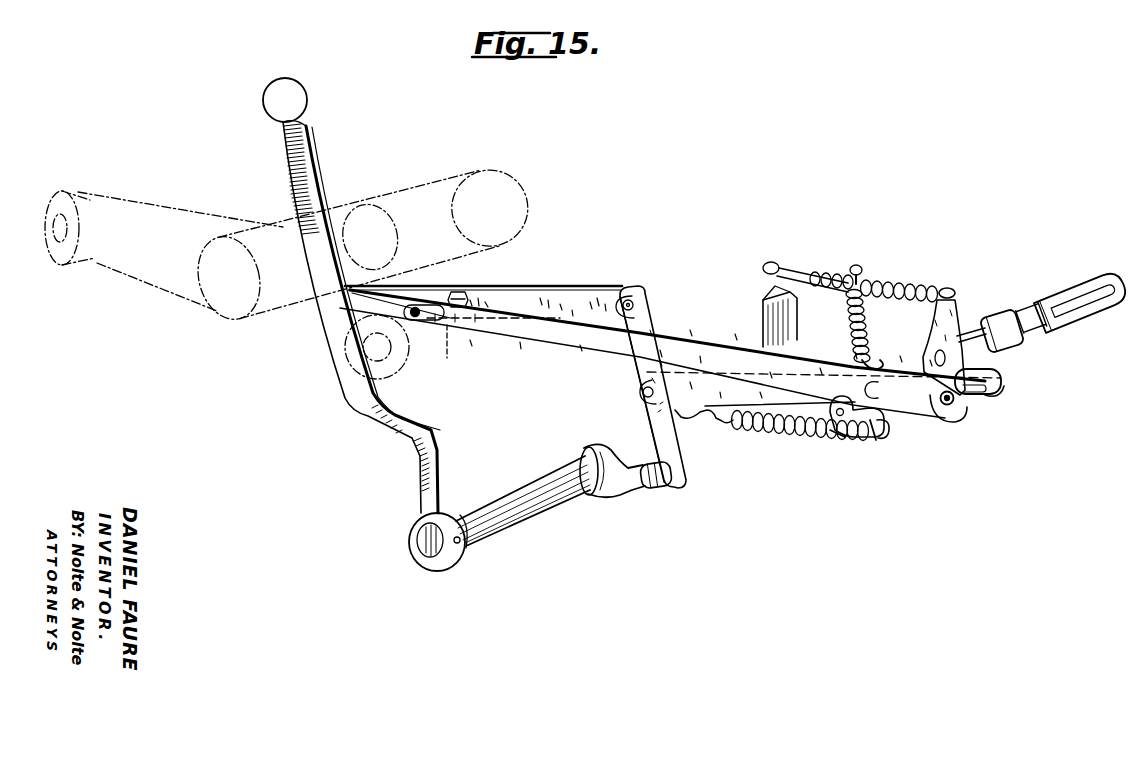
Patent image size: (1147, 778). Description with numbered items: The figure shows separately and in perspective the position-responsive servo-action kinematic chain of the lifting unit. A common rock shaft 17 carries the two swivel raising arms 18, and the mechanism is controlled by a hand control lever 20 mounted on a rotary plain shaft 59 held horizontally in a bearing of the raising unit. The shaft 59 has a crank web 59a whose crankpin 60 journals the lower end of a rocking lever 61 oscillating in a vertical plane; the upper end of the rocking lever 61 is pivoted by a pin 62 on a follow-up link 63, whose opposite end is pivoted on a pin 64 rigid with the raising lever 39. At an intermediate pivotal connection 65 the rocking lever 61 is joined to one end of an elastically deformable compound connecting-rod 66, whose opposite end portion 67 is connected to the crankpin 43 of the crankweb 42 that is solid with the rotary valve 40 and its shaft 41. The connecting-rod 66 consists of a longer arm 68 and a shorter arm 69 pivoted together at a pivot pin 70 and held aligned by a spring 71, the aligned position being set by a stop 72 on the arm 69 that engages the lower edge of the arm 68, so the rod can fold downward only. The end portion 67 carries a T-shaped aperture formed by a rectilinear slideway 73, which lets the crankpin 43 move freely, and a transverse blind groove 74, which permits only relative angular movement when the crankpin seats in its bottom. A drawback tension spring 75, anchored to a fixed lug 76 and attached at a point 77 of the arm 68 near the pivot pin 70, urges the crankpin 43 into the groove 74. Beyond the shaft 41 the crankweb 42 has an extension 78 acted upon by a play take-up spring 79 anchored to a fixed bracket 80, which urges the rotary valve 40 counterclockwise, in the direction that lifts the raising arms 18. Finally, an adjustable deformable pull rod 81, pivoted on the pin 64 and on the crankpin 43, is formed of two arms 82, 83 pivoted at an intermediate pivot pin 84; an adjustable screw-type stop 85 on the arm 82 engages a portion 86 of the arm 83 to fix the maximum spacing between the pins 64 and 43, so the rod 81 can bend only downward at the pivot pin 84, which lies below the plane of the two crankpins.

The rock shaft 17 is at (473, 193).
The raising arms 18 is at (93, 220).
The hand control lever 20 is at (288, 100).
The raising lever 39 is at (463, 290).
The rotary valve 40 is at (1107, 287).
The shaft of rotary valve 41 is at (961, 334).
The crankweb 42 is at (982, 320).
The crankpin 43 is at (965, 397).
The rotary plain shaft 59 is at (530, 498).
The crank web 59a is at (623, 500).
The crankpin 60 is at (657, 493).
The rocking lever 61 is at (655, 418).
The pin 62 is at (632, 298).
The follow-up link 63 is at (530, 306).
The pivot pin 64 is at (325, 322).
The pivotal connection 65 is at (653, 382).
The compound connecting-rod 66 is at (682, 413).
The end portion 67 is at (992, 387).
The arm 68 is at (803, 395).
The arm 69 is at (873, 422).
The pivot pin 70 is at (898, 420).
The spring 71 is at (763, 427).
The stop 72 is at (853, 437).
The slideway 73 is at (1000, 396).
The blind groove 74 is at (944, 412).
The drawback spring 75 is at (850, 313).
The fixed lug 76 is at (856, 264).
The attachment point 77 is at (868, 363).
The extension 78 is at (938, 296).
The play take-up spring 79 is at (890, 287).
The bracket 80 is at (773, 263).
The pull rod 81 is at (574, 349).
The arm 82 is at (503, 333).
The arm 83 is at (354, 364).
The pivot pin 84 is at (390, 402).
The adjustable stop 85 is at (487, 284).
The portion of arm 86 is at (456, 341).